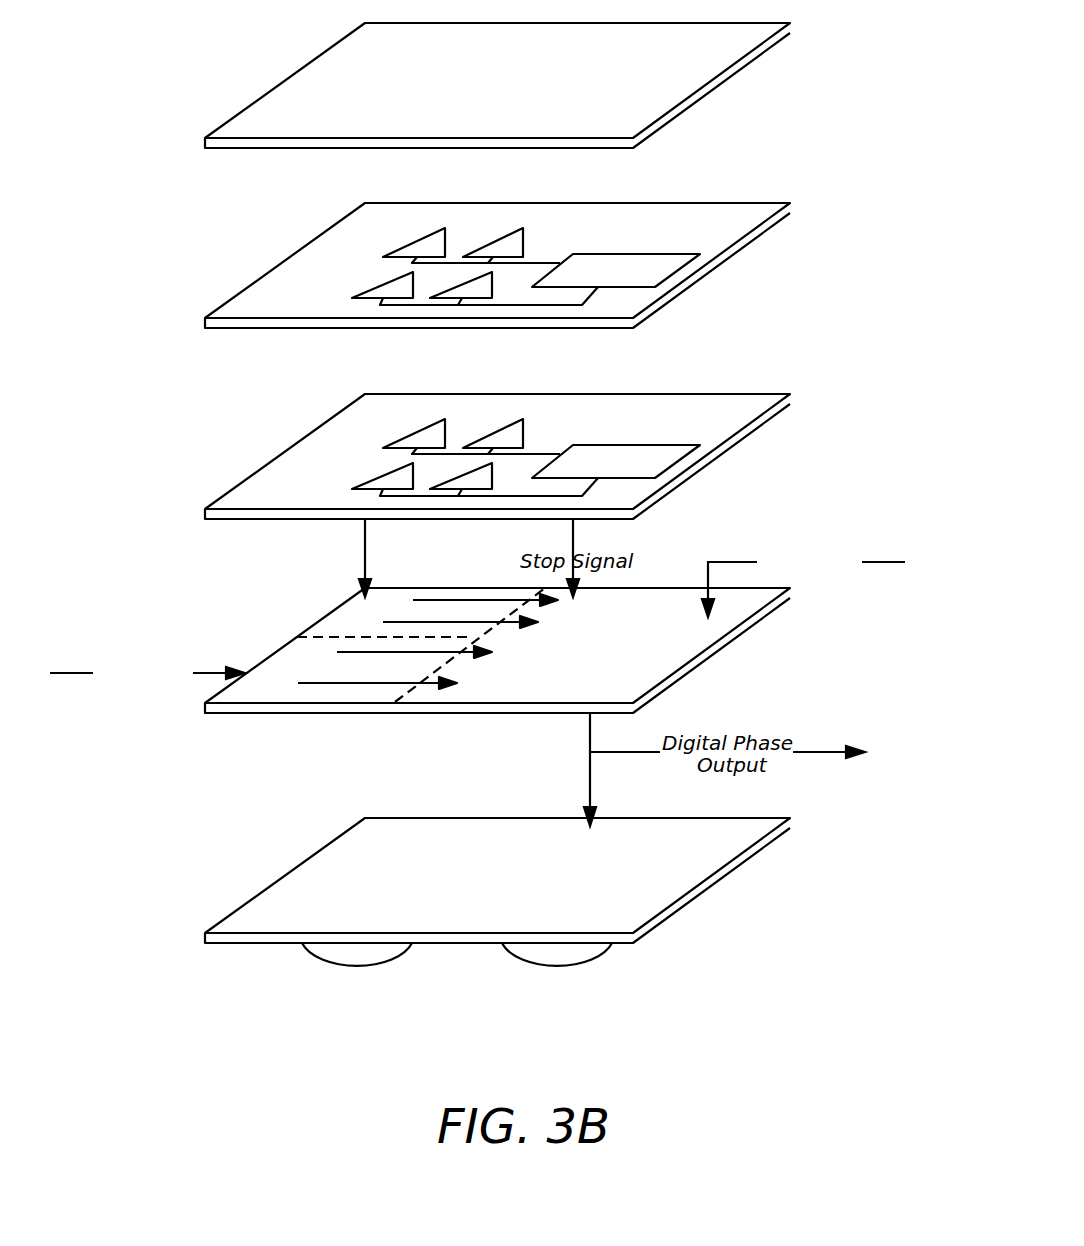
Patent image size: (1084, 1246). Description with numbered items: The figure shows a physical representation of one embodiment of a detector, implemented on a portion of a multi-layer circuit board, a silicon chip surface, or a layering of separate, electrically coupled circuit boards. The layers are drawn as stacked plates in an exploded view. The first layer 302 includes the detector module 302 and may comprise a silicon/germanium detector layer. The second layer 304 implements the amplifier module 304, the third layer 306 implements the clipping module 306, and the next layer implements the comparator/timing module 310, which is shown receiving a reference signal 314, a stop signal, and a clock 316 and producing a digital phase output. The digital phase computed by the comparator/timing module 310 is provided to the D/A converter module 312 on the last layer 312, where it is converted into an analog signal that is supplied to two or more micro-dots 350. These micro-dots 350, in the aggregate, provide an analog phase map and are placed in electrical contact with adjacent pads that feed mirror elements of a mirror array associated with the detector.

The first layer / detector module 302 is at (570, 87).
The second layer / amplifier module 304 is at (570, 264).
The third layer / clipping module 306 is at (567, 458).
The comparator/timing module 310 is at (569, 653).
The last layer / D/A converter module 312 is at (569, 883).
The reference signal 314 is at (147, 674).
The clock 316 is at (803, 583).
The micro-dots 350 is at (390, 963).